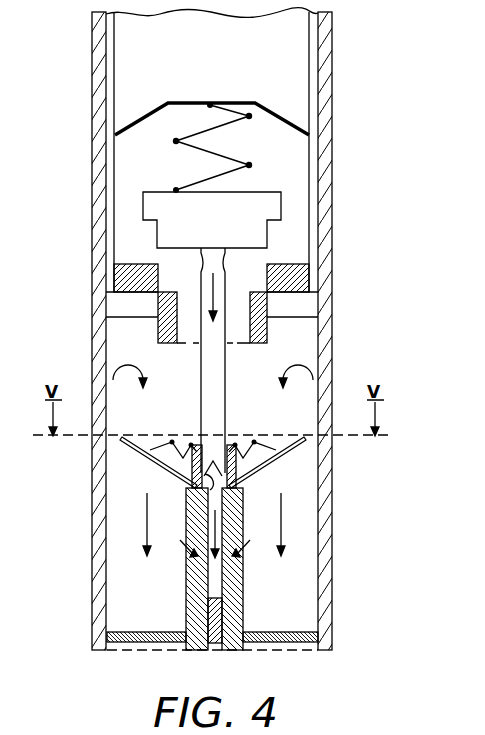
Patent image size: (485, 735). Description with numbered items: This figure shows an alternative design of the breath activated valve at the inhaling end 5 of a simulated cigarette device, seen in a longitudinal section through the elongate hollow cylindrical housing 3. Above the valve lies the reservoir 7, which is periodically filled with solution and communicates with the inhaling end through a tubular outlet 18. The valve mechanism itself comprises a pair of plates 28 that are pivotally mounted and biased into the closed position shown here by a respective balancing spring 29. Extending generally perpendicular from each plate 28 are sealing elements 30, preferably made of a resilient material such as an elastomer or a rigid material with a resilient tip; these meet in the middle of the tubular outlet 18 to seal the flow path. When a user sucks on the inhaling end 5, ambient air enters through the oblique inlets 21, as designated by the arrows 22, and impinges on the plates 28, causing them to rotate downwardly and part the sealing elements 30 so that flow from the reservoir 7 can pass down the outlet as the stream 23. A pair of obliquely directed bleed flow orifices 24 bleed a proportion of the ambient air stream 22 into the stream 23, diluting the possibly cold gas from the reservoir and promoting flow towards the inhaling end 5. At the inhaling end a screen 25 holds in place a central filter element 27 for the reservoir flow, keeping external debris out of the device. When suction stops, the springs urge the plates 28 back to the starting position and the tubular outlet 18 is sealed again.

The cylindrical housing 3 is at (332, 86).
The inhaling end 5 is at (81, 575).
The reservoir 7 is at (218, 68).
The tubular outlet 18 is at (213, 383).
The oblique inlets 21 is at (92, 367).
The ambient air stream 22 is at (140, 535).
The stream from the reservoir 23 is at (215, 515).
The bleed flow orifices 24 is at (186, 578).
The screen 25 is at (292, 650).
The central filter element 27 is at (222, 612).
The plates 28 is at (152, 447).
The balancing spring 29 is at (170, 463).
The sealing elements 30 is at (188, 490).